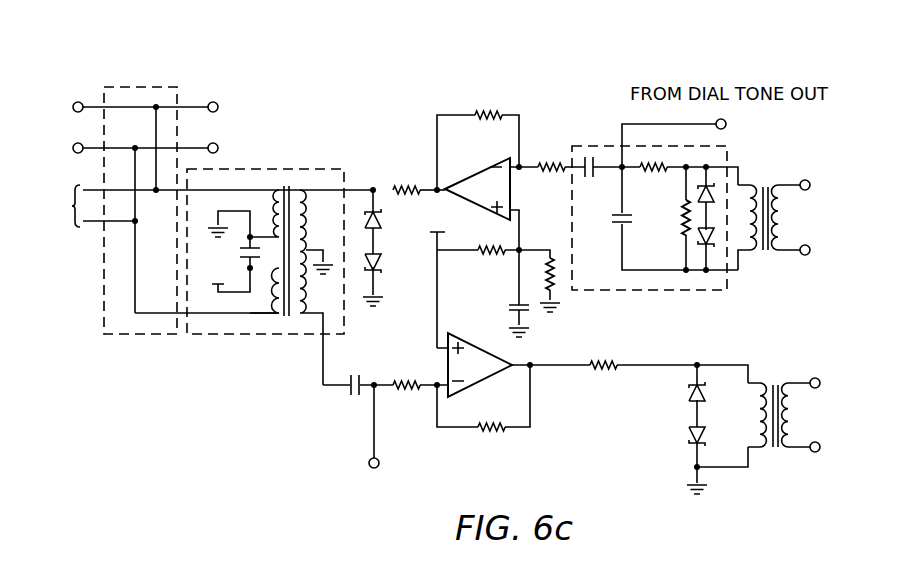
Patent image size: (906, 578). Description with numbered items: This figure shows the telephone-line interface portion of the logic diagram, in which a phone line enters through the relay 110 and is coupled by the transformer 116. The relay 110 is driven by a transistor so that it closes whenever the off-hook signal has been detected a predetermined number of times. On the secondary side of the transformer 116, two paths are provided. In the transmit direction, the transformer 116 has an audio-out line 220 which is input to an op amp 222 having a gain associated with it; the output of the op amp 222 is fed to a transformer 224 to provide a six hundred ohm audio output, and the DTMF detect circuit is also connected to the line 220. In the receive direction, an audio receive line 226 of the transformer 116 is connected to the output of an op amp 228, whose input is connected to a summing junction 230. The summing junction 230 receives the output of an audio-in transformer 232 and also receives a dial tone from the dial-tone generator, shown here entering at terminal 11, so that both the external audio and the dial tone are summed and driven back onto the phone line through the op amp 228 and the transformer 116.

The relay 110 is at (147, 85).
The transformer 116 is at (258, 335).
The audio receive line 226 is at (367, 185).
The op amp 228 is at (486, 174).
The summing junction 230 is at (618, 165).
The dial tone out terminal 11 is at (735, 124).
The audio-in transformer 232 is at (750, 277).
The op amp 222 is at (472, 344).
The audio-out line 220 is at (333, 389).
The transformer 224 is at (775, 452).